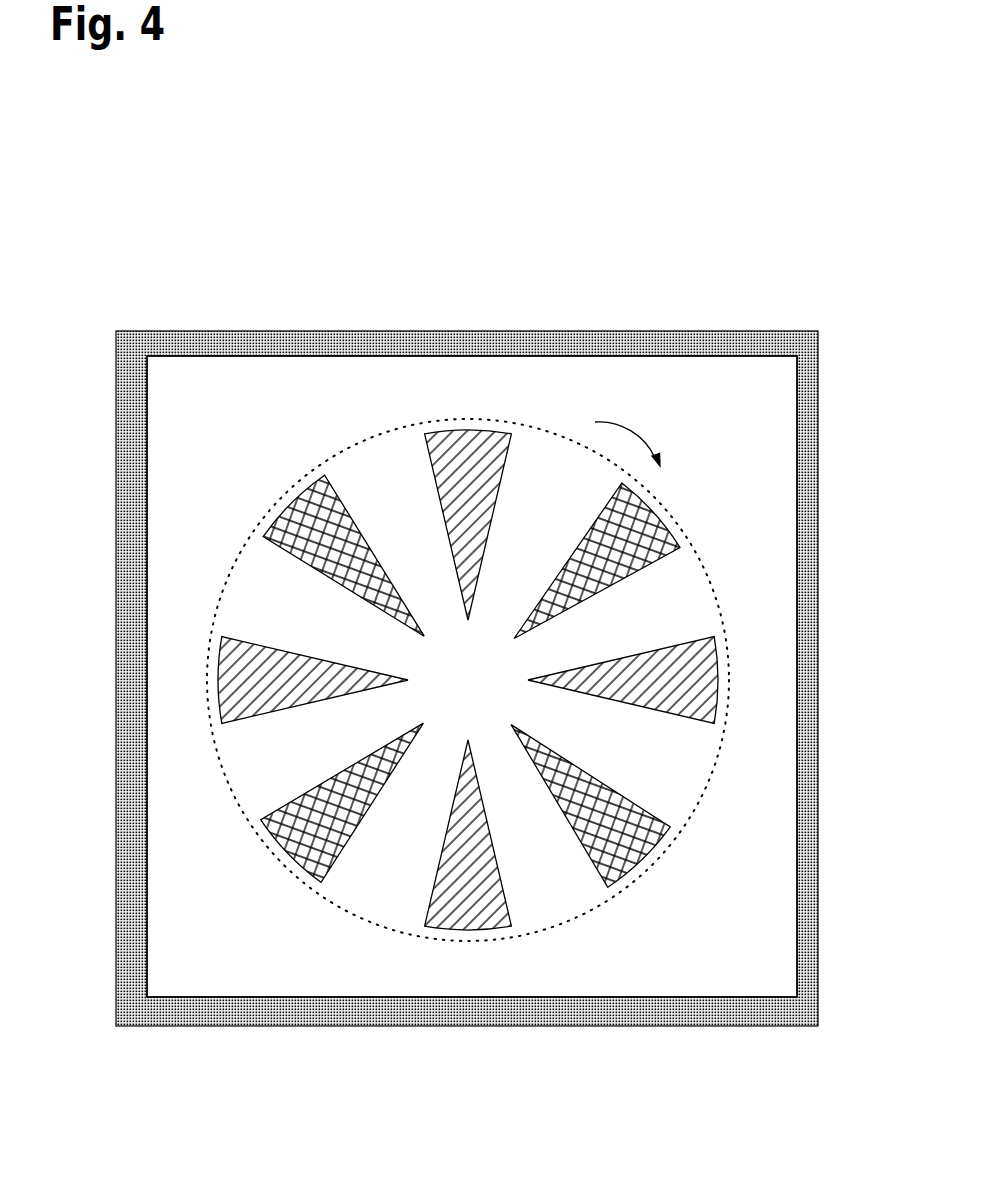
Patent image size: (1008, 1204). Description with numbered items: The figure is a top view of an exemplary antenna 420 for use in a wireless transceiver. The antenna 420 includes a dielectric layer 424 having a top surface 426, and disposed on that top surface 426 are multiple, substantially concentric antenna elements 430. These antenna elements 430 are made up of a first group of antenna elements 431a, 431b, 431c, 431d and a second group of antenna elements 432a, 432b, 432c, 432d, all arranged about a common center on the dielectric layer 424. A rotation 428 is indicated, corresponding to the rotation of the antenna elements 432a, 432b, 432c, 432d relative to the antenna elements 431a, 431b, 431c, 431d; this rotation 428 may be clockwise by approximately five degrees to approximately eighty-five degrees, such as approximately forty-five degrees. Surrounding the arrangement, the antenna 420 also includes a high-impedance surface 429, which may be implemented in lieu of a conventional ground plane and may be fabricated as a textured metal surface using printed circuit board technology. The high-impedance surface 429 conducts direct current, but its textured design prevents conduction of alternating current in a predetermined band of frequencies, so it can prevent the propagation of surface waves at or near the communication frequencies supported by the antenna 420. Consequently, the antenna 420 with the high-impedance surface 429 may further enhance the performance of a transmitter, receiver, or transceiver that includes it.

The antenna 420 is at (773, 158).
The dielectric layer 424 is at (212, 408).
The top surface 426 is at (383, 372).
The rotation 428 is at (635, 435).
The high-impedance surface 429 is at (228, 330).
The antenna elements 430 is at (593, 913).
The antenna element 431a is at (456, 433).
The antenna element 431b is at (716, 642).
The antenna element 431c is at (468, 922).
The antenna element 431d is at (228, 652).
The antenna element 432a is at (652, 507).
The antenna element 432b is at (648, 860).
The antenna element 432c is at (295, 848).
The antenna element 432d is at (295, 512).